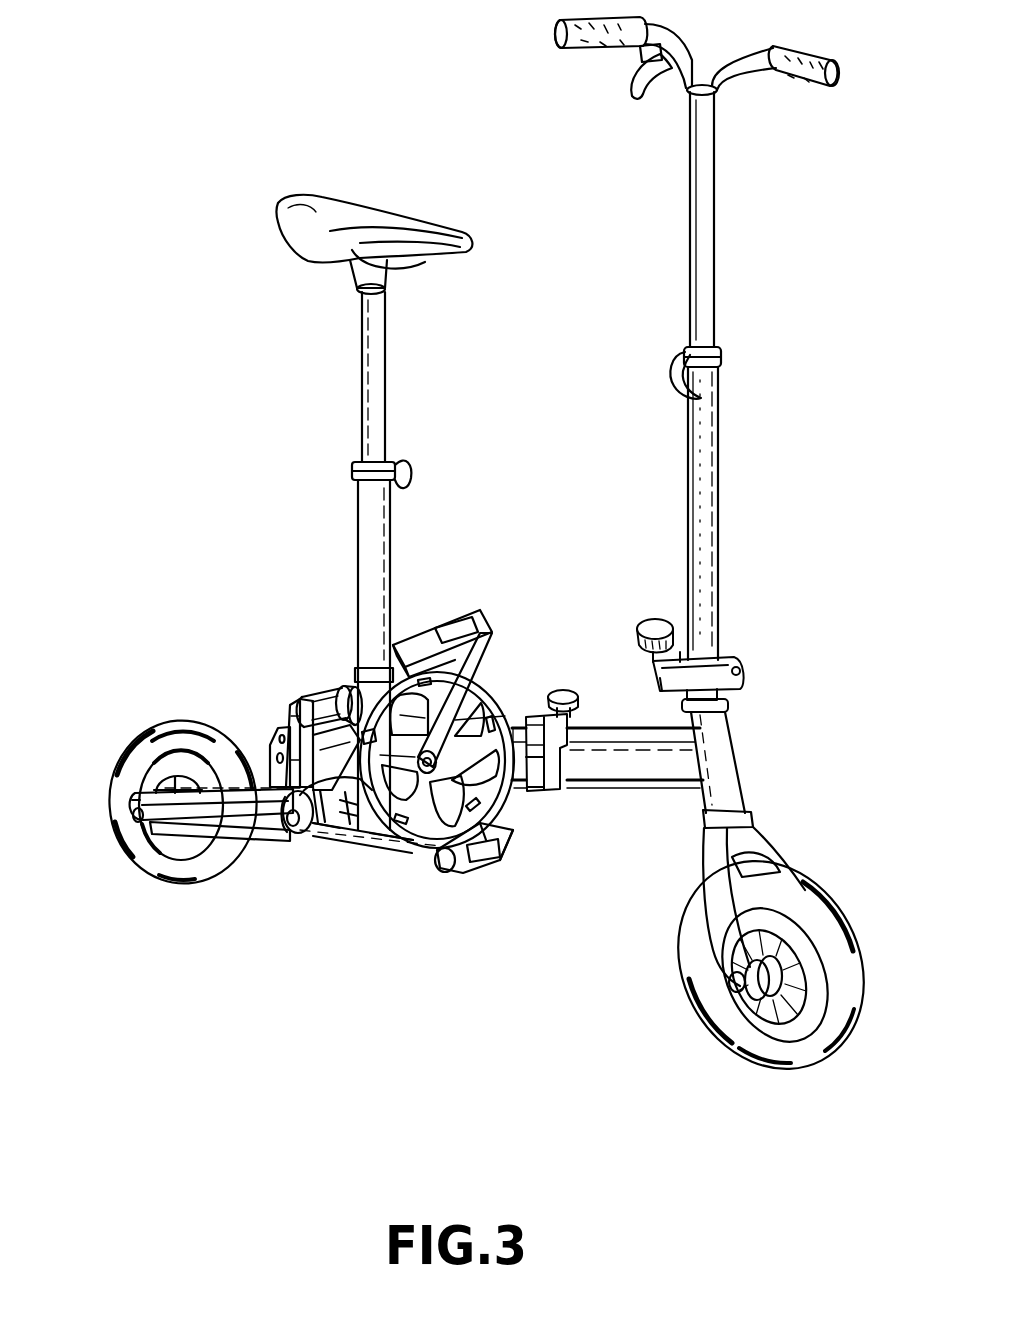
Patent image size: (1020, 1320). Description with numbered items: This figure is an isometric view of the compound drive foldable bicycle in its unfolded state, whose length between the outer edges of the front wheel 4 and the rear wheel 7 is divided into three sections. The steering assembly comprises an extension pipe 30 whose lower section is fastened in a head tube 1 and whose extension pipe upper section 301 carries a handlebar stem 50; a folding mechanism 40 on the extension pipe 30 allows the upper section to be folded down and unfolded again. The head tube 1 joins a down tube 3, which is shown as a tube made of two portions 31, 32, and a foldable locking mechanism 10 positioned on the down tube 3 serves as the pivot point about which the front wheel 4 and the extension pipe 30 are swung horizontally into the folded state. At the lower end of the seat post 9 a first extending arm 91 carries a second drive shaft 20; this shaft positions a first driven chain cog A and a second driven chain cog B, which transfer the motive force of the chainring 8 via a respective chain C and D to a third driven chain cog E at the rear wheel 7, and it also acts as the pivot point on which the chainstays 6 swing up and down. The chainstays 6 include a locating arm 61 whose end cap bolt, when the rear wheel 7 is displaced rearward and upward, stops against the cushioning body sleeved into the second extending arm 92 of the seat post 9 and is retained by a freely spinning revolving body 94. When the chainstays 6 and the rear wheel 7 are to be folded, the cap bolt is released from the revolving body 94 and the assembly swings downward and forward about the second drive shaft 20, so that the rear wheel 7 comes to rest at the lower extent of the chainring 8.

The head tube 1 is at (722, 762).
The down tube 3 is at (591, 895).
The front wheel 4 is at (837, 973).
The chainstays 6 is at (213, 830).
The rear wheel 7 is at (143, 748).
The chainring 8 is at (443, 867).
The seat post 9 is at (360, 675).
The foldable locking mechanism 10 is at (560, 682).
The second drive shaft 20 is at (296, 835).
The extension pipe 30 is at (707, 490).
The extension pipe upper section 301 is at (767, 510).
The rear frame tube section 31 is at (622, 778).
The front frame tube section 32 is at (480, 757).
The folding mechanism 40 is at (655, 617).
The handlebar stem 50 is at (712, 233).
The locating arm 61 is at (282, 735).
The first extending arm 91 is at (341, 805).
The second extending arm 92 is at (343, 692).
The revolving body 94 is at (310, 697).
The first driven chain cog A is at (306, 825).
The second driven chain cog B is at (325, 823).
The chain C is at (383, 843).
The chain D is at (247, 797).
The third driven chain cog E is at (137, 793).